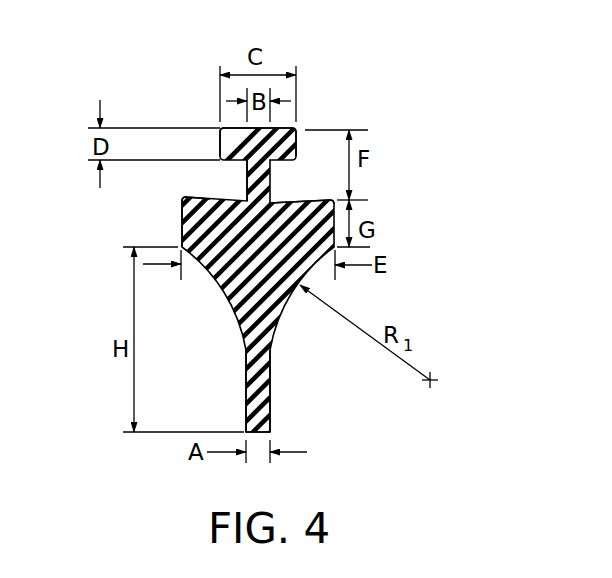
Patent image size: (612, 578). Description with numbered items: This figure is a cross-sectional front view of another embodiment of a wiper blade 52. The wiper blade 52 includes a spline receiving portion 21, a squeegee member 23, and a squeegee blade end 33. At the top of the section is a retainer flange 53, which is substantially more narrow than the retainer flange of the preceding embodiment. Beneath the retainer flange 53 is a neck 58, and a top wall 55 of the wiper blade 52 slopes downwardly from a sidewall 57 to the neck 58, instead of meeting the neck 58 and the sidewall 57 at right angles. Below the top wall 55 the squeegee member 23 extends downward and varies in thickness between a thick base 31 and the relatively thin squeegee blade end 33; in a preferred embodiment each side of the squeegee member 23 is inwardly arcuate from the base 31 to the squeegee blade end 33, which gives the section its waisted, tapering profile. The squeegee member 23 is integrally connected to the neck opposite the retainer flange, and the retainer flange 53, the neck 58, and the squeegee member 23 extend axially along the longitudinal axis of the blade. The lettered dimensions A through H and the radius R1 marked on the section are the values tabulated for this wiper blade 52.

The wiper blade 52 is at (135, 110).
The retainer flange 53 is at (219, 147).
The spline receiving portion 21 is at (300, 135).
The top wall 55 is at (306, 197).
The sidewall 57 is at (179, 203).
The base 31 is at (178, 228).
The neck 58 is at (246, 185).
The squeegee member 23 is at (267, 370).
The squeegee blade end 33 is at (271, 433).